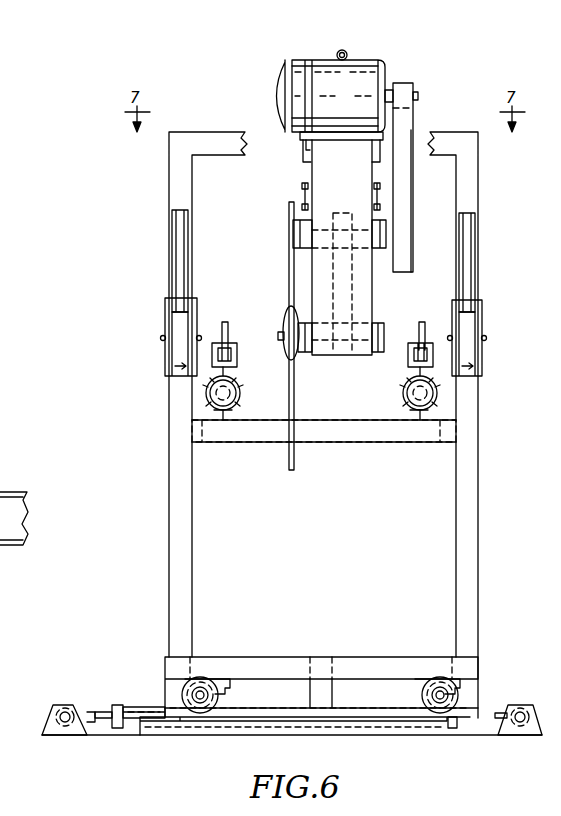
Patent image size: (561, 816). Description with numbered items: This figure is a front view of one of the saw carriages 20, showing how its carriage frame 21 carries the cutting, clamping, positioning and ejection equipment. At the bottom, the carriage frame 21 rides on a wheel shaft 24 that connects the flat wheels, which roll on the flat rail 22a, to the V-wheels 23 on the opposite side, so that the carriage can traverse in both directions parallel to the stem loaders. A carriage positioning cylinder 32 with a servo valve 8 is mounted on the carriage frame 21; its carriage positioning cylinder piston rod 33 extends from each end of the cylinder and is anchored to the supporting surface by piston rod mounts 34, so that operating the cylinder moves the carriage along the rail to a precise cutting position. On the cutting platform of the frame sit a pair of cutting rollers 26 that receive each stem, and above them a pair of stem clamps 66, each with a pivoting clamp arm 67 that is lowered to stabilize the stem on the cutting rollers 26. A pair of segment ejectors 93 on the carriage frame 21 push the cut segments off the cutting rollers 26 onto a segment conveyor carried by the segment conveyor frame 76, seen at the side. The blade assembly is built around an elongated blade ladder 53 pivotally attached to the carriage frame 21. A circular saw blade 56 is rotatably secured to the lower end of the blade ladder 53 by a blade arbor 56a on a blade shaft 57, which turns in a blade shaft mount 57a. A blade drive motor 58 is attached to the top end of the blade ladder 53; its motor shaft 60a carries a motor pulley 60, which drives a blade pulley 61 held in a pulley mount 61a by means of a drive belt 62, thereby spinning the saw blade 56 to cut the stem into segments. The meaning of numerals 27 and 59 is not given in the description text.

The servo valve 8 is at (143, 728).
The saw carriage 20 is at (162, 420).
The carriage frame 21 is at (165, 465).
The flat rail 22a is at (418, 732).
The V-wheels 23 is at (205, 678).
The wheel shaft 24 is at (210, 697).
The cutting rollers 26 is at (222, 412).
The sprocket shaft 27 is at (240, 384).
The carriage positioning cylinder 32 is at (134, 706).
The carriage positioning cylinder piston rod 33 is at (108, 708).
The piston rod mounts 34 is at (44, 730).
The blade ladder 53 is at (370, 280).
The circular saw blade 56 is at (288, 258).
The blade arbor 56a is at (286, 320).
The blade shaft 57 is at (306, 354).
The blade shaft mount 57a is at (374, 354).
The blade drive motor 58 is at (332, 64).
The motor mount 59 is at (304, 142).
The motor pulley 60 is at (411, 84).
The motor shaft 60a is at (392, 88).
The blade pulley 61 is at (413, 262).
The pulley mount 61a is at (298, 196).
The drive belt 62 is at (416, 140).
The stem clamps 66 is at (158, 248).
The clamp arm 67 is at (172, 267).
The segment conveyor frame 76 is at (13, 494).
The segment ejectors 93 is at (240, 341).